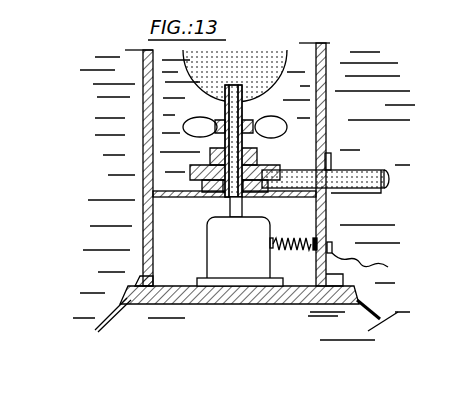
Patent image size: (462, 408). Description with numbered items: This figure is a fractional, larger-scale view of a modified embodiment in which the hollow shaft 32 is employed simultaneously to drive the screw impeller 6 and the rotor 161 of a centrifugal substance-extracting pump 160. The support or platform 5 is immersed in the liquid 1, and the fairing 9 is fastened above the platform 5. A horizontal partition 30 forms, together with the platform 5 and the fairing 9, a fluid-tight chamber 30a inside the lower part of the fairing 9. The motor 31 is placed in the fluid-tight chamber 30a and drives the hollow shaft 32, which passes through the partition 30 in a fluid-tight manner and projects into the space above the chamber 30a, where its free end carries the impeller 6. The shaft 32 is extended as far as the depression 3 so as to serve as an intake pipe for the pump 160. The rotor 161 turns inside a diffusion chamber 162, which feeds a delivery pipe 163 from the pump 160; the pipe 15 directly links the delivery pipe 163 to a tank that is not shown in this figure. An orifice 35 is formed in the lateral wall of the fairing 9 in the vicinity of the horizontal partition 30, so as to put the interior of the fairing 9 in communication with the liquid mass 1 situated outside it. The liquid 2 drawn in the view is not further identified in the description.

The liquid 1 is at (112, 85).
The liquid conduit 2 is at (263, 62).
The depression 3 is at (235, 76).
The platform 5 is at (173, 300).
The screw impeller 6 is at (283, 127).
The fairing 9 is at (325, 80).
The pipe 15 is at (372, 192).
The horizontal partition 30 is at (148, 222).
The fluid-tight chamber 30a is at (173, 257).
The motor 31 is at (249, 264).
The hollow shaft 32 is at (248, 110).
The orifice 35 is at (150, 190).
The centrifugal substance-extracting pump 160 is at (280, 160).
The rotor 161 is at (200, 172).
The diffusion chamber 162 is at (203, 182).
The delivery pipe 163 is at (297, 184).